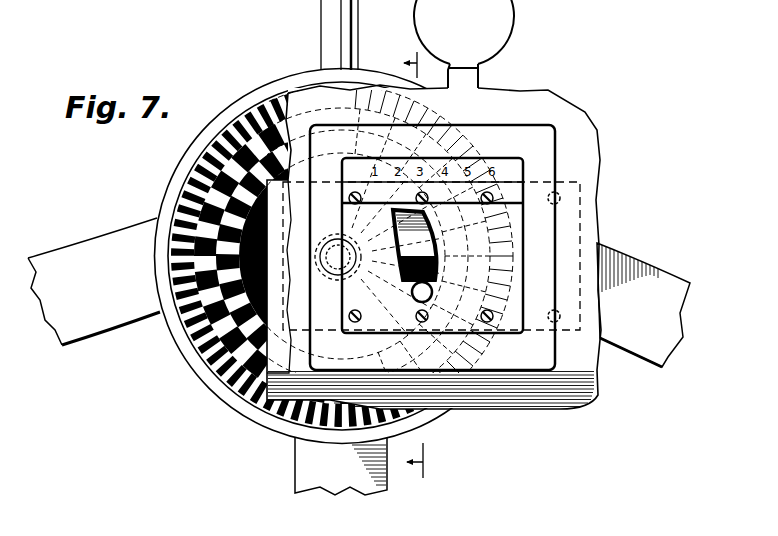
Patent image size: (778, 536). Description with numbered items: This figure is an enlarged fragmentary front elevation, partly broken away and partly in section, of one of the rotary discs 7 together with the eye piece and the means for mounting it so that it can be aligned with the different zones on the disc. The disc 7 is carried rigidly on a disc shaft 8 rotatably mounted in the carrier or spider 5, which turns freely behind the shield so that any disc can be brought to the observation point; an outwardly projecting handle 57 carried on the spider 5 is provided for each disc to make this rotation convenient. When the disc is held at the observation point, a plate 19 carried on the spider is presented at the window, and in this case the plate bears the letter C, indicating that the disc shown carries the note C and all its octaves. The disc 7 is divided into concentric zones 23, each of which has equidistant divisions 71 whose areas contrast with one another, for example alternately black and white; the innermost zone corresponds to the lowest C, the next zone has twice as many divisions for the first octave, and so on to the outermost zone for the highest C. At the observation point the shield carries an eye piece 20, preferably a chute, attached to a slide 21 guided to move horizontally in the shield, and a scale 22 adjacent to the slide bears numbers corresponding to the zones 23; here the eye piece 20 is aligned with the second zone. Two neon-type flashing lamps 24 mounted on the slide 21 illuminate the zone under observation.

The carrier or spider 5 is at (674, 284).
The rotary disc 7 is at (276, 441).
The disc shaft 8 is at (420, 268).
The plate 19 is at (512, 22).
The eye piece 20 is at (400, 257).
The slide 21 is at (196, 178).
The scale 22 is at (482, 138).
The zones 23 is at (178, 243).
The flashing lamps 24 is at (410, 296).
The handle 57 is at (321, 27).
The divisions 71 is at (222, 366).